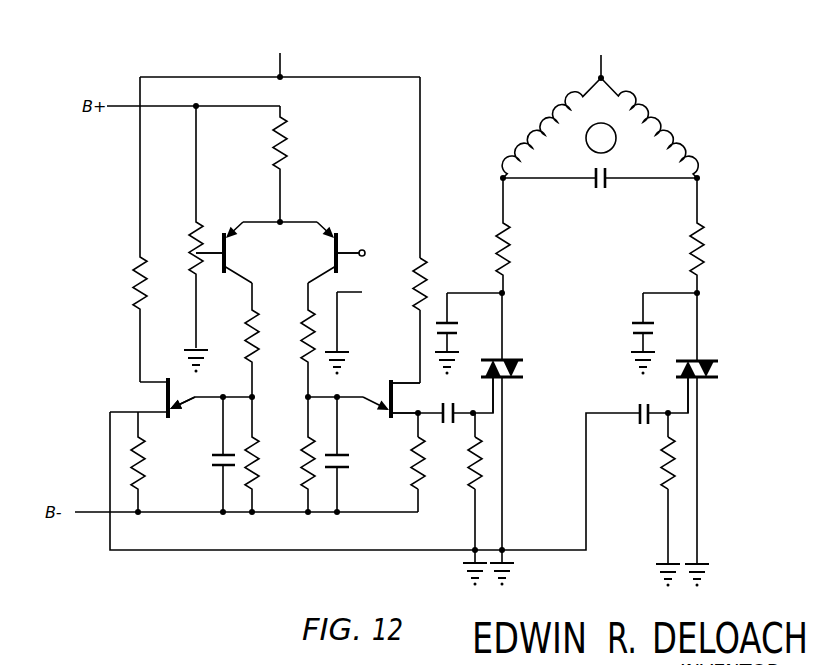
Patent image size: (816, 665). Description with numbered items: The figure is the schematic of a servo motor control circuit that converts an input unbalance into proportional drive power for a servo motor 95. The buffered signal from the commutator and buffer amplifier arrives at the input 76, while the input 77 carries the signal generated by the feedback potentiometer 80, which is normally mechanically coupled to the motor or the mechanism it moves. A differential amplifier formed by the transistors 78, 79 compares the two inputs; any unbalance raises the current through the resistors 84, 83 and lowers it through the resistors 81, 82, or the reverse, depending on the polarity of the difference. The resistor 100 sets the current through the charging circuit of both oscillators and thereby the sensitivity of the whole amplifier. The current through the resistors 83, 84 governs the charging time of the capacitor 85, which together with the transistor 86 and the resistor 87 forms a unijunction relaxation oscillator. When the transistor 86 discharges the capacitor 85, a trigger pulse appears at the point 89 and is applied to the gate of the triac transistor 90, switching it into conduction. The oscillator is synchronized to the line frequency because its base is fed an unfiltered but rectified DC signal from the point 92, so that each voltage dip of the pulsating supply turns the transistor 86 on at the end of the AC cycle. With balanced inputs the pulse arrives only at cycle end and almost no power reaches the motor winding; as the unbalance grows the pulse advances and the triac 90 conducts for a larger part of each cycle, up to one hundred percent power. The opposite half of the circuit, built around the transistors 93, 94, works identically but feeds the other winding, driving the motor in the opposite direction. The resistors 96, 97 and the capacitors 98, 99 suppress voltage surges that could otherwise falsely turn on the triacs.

The point 92 is at (283, 62).
The resistor 100 is at (284, 124).
The feedback potentiometer 80 is at (192, 252).
The resistor 81 is at (144, 282).
The input 77 is at (217, 240).
The transistor 79 is at (230, 263).
The transistor 78 is at (337, 234).
The input 76 is at (365, 250).
The resistor 84 is at (250, 342).
The resistor 82 is at (312, 330).
The transistor 86 is at (169, 375).
The point 89 is at (156, 410).
The resistor 87 is at (142, 462).
The capacitor 85 is at (216, 453).
The resistor 83 is at (255, 445).
The transistor 93 is at (396, 369).
The capacitor 98 is at (450, 320).
The transistor 94 is at (512, 358).
The motor 95 is at (645, 123).
The resistor 96 is at (508, 243).
The resistor 97 is at (702, 243).
The capacitor 99 is at (646, 320).
The triac transistor 90 is at (718, 349).